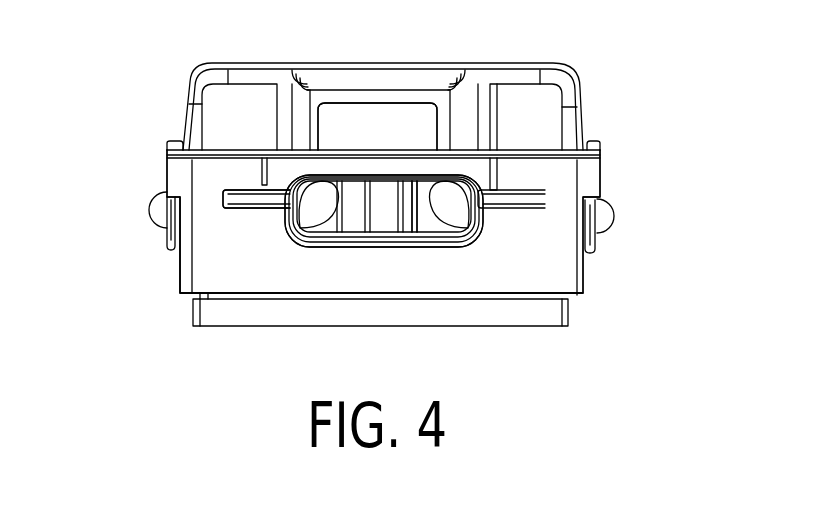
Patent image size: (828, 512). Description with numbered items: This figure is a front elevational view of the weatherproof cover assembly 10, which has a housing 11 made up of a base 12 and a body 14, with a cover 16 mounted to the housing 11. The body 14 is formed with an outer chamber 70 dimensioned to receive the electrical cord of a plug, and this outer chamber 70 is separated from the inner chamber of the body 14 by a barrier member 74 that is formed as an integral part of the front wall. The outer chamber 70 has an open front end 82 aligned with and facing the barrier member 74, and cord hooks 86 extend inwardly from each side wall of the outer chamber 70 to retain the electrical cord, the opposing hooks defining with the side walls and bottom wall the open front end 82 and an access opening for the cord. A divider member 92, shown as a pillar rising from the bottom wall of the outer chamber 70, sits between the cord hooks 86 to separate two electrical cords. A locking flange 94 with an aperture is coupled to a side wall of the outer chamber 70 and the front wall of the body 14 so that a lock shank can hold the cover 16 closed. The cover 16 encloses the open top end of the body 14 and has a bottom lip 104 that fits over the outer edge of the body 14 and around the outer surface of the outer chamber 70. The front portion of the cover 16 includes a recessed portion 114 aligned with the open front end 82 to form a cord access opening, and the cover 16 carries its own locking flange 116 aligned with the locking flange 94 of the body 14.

The weatherproof cover assembly 10 is at (122, 209).
The housing 11 is at (167, 284).
The base 12 is at (576, 318).
The body 14 is at (592, 271).
The cover 16 is at (590, 96).
The outer chamber 70 is at (337, 262).
The barrier member 74 is at (345, 220).
The open front end 82 is at (328, 219).
The cord hook 86 is at (330, 197).
The divider member 92 is at (380, 220).
The locking flange 94 is at (243, 207).
The bottom lip 104 is at (372, 123).
The recessed portion 114 is at (417, 217).
The locking flange 116 is at (245, 200).